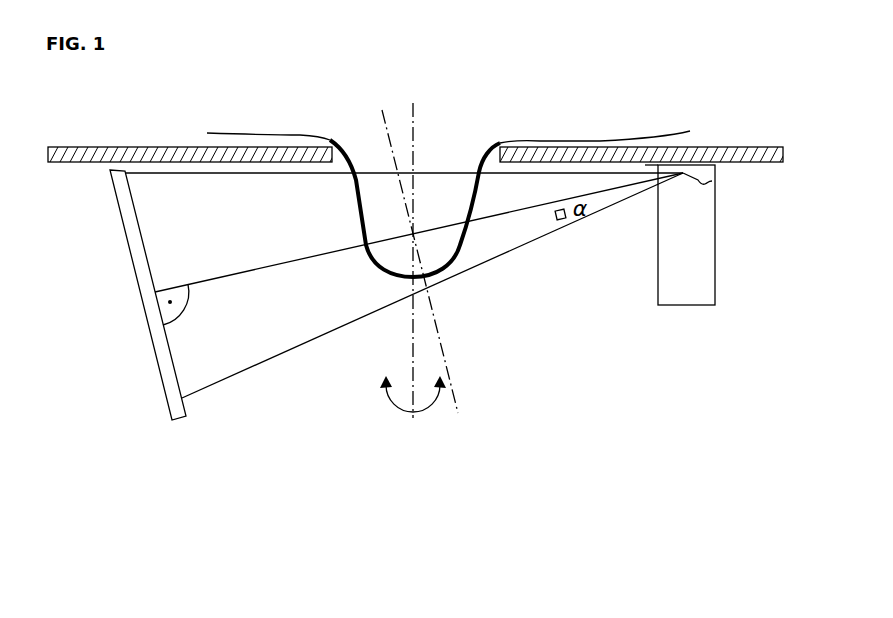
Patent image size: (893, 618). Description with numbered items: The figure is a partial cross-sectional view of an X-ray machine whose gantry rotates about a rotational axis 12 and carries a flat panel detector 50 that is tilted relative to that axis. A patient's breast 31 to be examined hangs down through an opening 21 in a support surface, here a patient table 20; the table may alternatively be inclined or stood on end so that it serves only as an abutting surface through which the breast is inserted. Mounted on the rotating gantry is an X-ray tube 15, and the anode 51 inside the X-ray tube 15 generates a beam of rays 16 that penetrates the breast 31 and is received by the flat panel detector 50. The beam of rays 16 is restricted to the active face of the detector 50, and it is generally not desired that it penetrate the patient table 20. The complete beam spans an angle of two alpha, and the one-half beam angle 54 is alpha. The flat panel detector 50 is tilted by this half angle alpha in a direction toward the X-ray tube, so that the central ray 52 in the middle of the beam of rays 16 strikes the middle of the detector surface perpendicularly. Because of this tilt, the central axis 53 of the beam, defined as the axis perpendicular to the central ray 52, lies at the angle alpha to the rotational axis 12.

The rotational axis 12 is at (415, 116).
The X-ray tube 15 is at (707, 286).
The beam of rays 16 is at (300, 350).
The patient table 20 is at (62, 162).
The opening 21 is at (490, 175).
The breast 31 is at (445, 249).
The flat panel detector 50 is at (183, 413).
The anode 51 is at (712, 181).
The central ray 52 is at (263, 267).
The central axis 53 is at (460, 405).
The one-half beam angle 54 is at (565, 222).